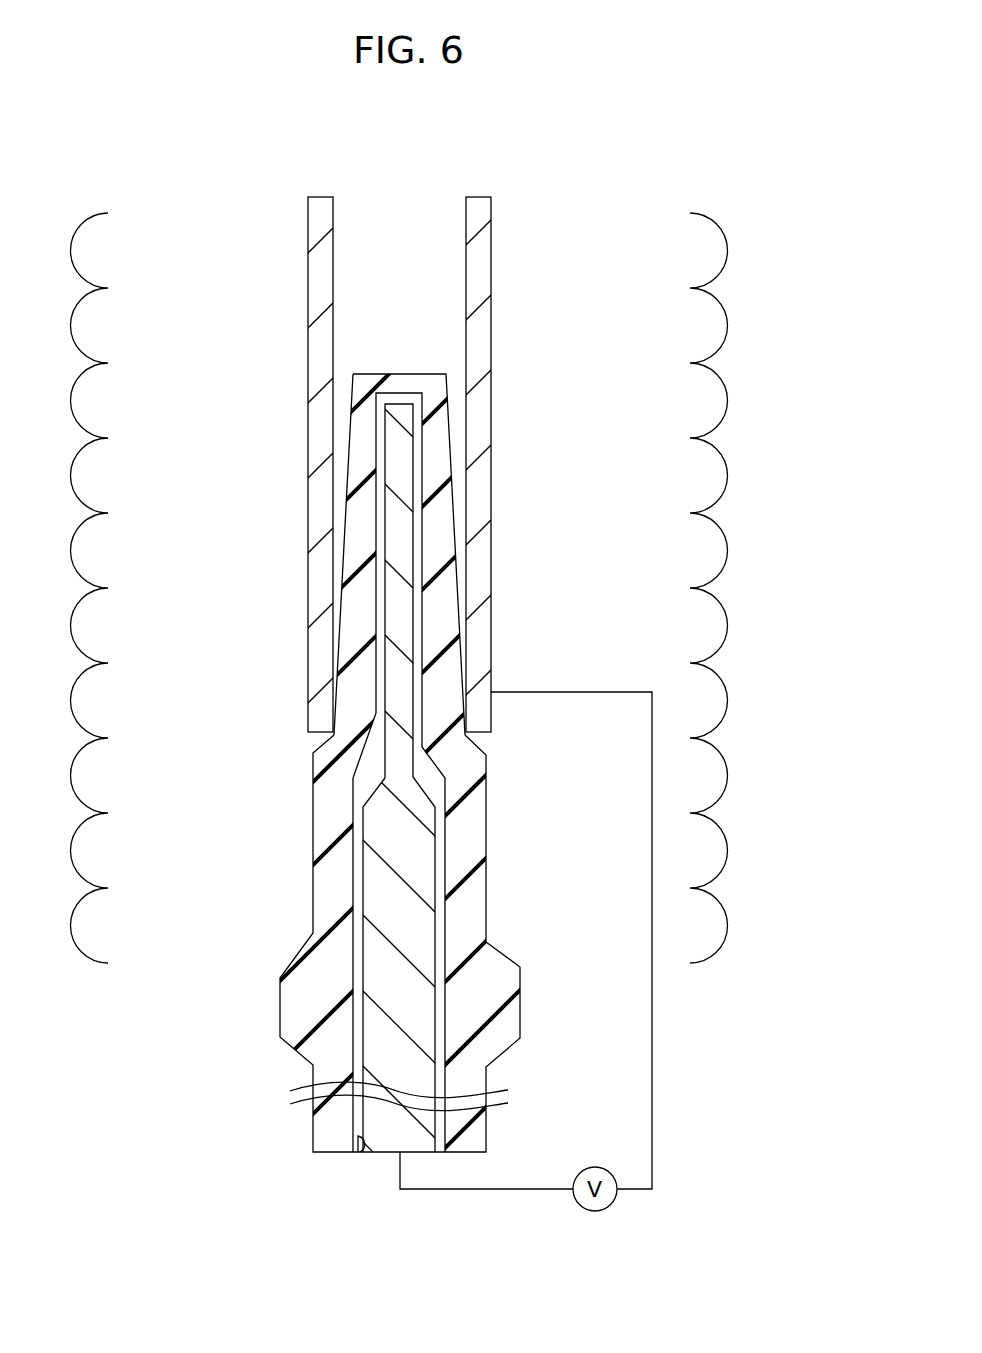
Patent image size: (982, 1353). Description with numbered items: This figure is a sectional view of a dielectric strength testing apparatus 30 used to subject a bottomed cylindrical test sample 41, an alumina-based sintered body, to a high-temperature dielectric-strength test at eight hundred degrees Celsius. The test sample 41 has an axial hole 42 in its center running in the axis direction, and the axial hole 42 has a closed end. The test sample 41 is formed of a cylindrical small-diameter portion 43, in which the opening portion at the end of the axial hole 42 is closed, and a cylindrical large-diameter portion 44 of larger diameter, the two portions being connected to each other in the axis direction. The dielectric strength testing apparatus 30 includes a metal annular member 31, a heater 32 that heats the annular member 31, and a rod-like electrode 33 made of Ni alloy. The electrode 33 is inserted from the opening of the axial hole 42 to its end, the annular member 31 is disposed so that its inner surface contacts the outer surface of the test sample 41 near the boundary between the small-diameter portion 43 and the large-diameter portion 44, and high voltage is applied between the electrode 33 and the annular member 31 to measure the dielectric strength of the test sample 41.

The dielectric strength testing apparatus 30 is at (742, 95).
The annular member 31 is at (323, 273).
The heater 32 is at (725, 382).
The rod-like electrode 33 is at (390, 1138).
The test sample 41 is at (370, 808).
The axial hole 42 is at (358, 1150).
The small-diameter portion 43 is at (355, 632).
The large-diameter portion 44 is at (330, 823).